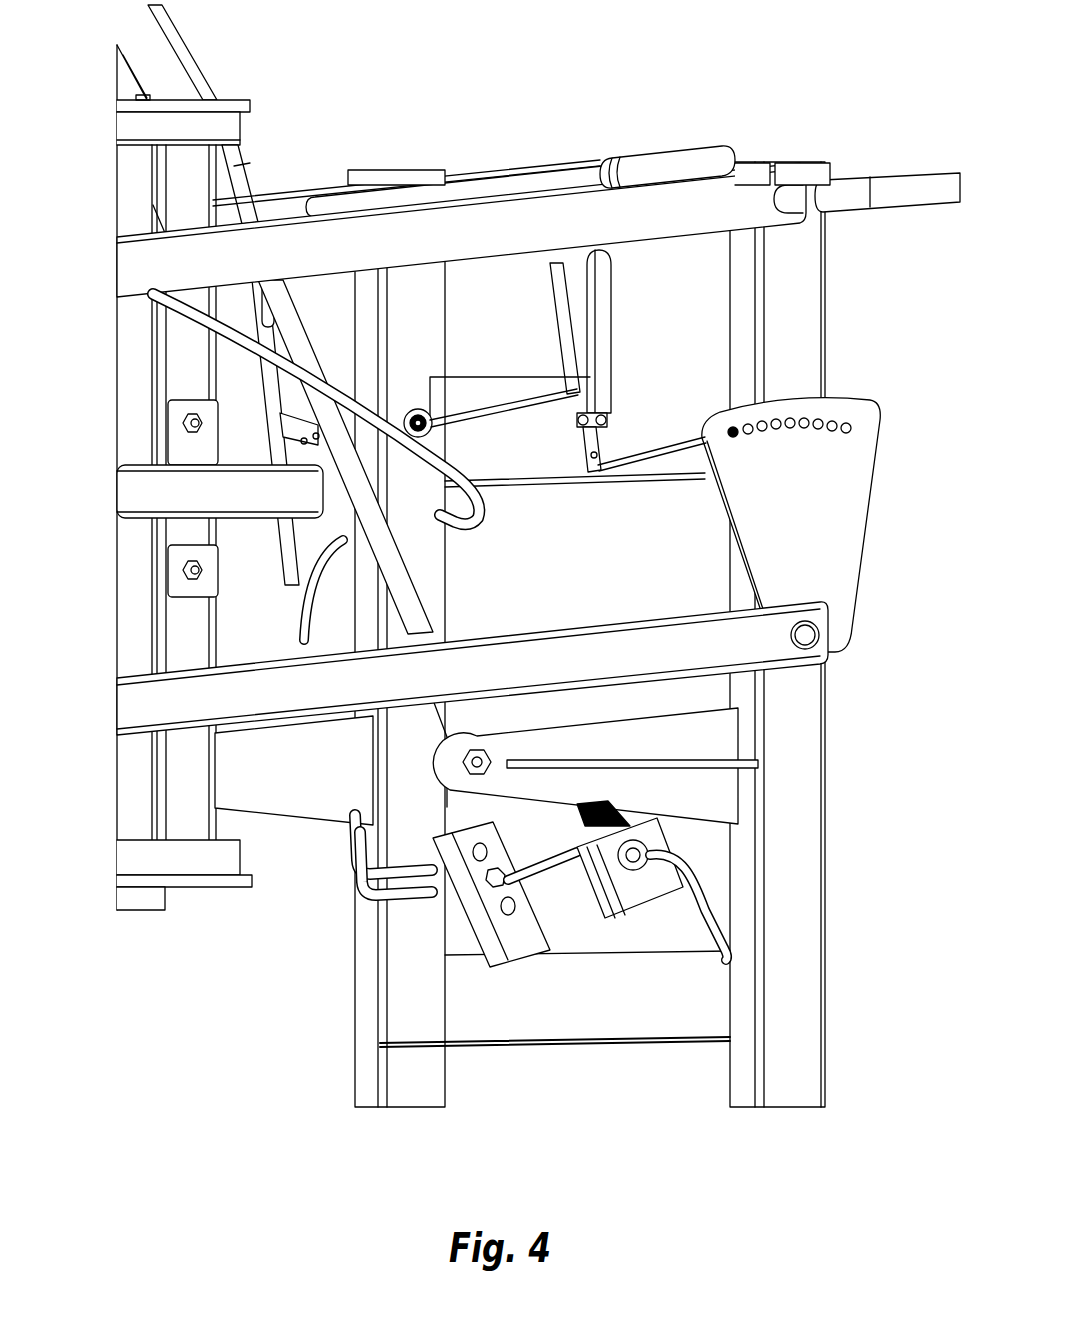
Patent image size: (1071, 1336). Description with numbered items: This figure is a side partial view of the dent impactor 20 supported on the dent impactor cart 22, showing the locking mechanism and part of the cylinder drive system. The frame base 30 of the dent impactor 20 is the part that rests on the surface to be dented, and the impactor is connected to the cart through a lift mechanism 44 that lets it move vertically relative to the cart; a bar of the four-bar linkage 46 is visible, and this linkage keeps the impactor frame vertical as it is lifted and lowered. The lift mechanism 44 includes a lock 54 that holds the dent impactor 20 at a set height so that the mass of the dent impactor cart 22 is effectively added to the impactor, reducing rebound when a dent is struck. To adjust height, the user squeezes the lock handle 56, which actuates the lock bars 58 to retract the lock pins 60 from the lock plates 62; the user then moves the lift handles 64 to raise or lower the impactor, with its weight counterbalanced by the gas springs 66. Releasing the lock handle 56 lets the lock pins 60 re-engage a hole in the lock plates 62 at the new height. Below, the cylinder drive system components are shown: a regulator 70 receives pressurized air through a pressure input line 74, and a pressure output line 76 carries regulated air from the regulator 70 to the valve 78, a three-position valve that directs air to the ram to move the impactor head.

The dent impactor 20 is at (253, 49).
The dent impactor cart 22 is at (331, 1067).
The frame base 30 is at (172, 930).
The lift mechanism 44 is at (545, 142).
The 4-bar linkage 46 is at (658, 660).
The lock 54 is at (848, 660).
The lock handle 56 is at (636, 323).
The lock bars 58 is at (455, 416).
The lock pins 60 is at (830, 420).
The lock plates 62 is at (840, 515).
The lift handles 64 is at (648, 167).
The gas springs 66 is at (385, 548).
The regulator 70 is at (603, 902).
The pressure input line 74 is at (703, 912).
The pressure output line 76 is at (545, 872).
The valve 78 is at (497, 957).